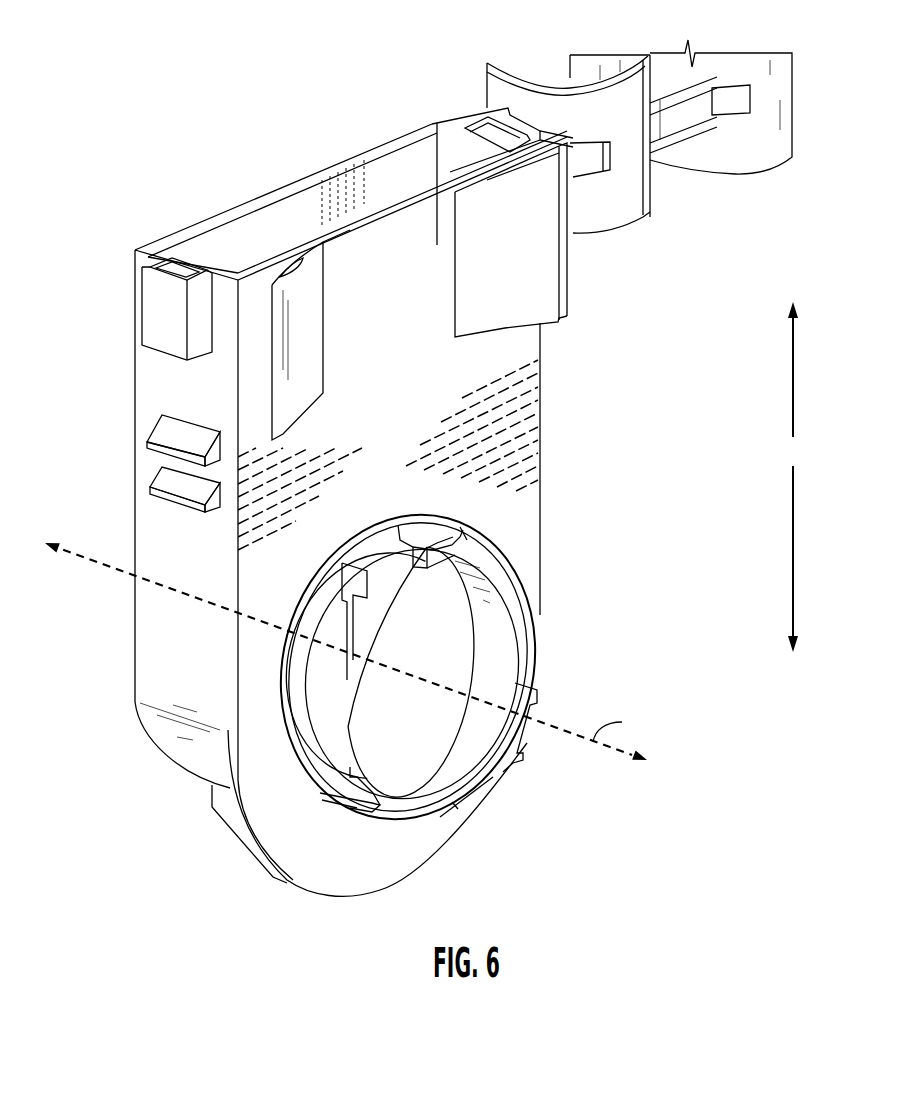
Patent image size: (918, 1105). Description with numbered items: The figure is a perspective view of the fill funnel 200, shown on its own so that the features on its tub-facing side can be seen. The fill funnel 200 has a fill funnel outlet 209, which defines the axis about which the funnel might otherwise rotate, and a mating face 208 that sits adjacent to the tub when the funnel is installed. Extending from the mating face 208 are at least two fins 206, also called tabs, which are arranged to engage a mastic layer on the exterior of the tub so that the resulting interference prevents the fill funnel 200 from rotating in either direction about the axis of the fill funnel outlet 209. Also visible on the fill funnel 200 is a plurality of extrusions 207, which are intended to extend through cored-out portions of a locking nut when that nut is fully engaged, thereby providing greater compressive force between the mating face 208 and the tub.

The fill funnel 200 is at (422, 461).
The fins 206 is at (298, 297).
The extrusions 207 is at (447, 543).
The mating face 208 is at (428, 242).
The fill funnel outlet 209 is at (490, 640).